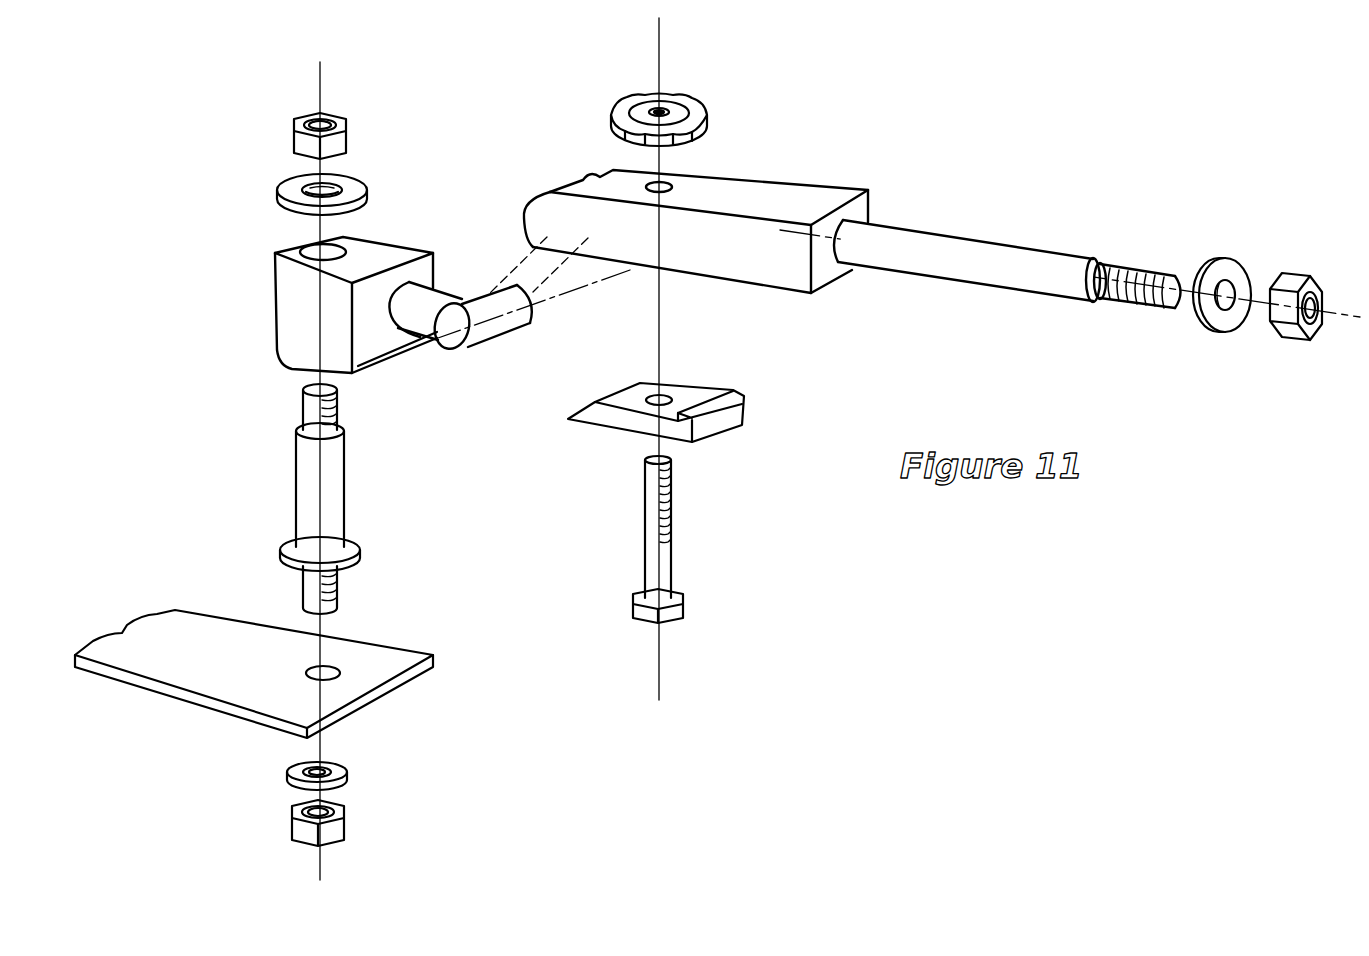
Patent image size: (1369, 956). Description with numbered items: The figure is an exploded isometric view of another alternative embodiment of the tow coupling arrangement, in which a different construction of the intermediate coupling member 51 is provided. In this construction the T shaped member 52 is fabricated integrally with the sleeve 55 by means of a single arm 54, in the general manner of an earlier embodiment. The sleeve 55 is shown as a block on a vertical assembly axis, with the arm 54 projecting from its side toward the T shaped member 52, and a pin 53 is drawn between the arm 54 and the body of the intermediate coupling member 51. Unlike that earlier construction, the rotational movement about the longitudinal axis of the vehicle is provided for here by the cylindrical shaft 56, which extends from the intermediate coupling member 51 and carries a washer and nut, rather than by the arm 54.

The intermediate coupling member 51 is at (447, 268).
The T shaped member 52 is at (428, 356).
The pin 53 is at (508, 326).
The single arm 54 is at (447, 297).
The sleeve 55 is at (358, 255).
The cylindrical shaft 56 is at (925, 237).